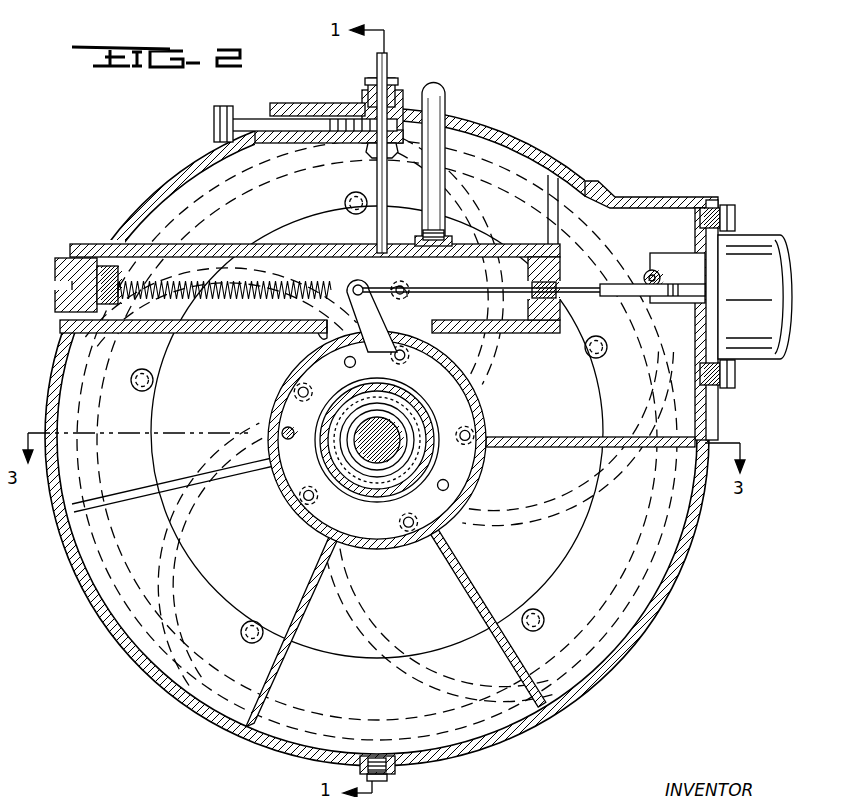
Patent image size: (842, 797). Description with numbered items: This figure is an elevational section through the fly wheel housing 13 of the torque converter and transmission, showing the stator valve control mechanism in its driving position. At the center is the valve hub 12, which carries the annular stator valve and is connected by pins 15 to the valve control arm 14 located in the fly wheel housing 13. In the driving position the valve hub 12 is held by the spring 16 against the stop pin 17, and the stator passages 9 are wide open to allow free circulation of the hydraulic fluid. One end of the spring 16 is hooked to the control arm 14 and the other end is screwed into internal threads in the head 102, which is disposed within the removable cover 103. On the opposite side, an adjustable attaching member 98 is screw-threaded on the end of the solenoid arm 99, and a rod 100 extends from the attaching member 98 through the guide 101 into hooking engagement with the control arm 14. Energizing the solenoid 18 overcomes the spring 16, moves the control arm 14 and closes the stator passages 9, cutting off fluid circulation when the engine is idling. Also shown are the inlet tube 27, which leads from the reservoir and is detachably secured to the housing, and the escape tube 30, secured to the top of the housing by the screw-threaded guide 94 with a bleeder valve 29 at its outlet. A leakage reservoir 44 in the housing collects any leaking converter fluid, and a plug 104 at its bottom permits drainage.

The stator passages 9 is at (606, 398).
The valve hub 12 is at (452, 362).
The fly wheel housing 13 is at (518, 150).
The valve control arm 14 is at (392, 304).
The pins 15 is at (351, 368).
The spring 16 is at (318, 282).
The stop pin 17 is at (281, 436).
The solenoid 18 is at (748, 235).
The inlet tube 27 is at (446, 112).
The bleeder valve 29 is at (338, 104).
The escape tube 30 is at (388, 62).
The leakage reservoir 44 is at (438, 635).
The screw-threaded guide 94 is at (398, 92).
The adjustable attaching member 98 is at (645, 270).
The solenoid arm 99 is at (676, 284).
The rod 100 is at (440, 288).
The guide 101 is at (562, 300).
The head 102 is at (105, 266).
The removable cover 103 is at (58, 258).
The plug 104 is at (389, 773).